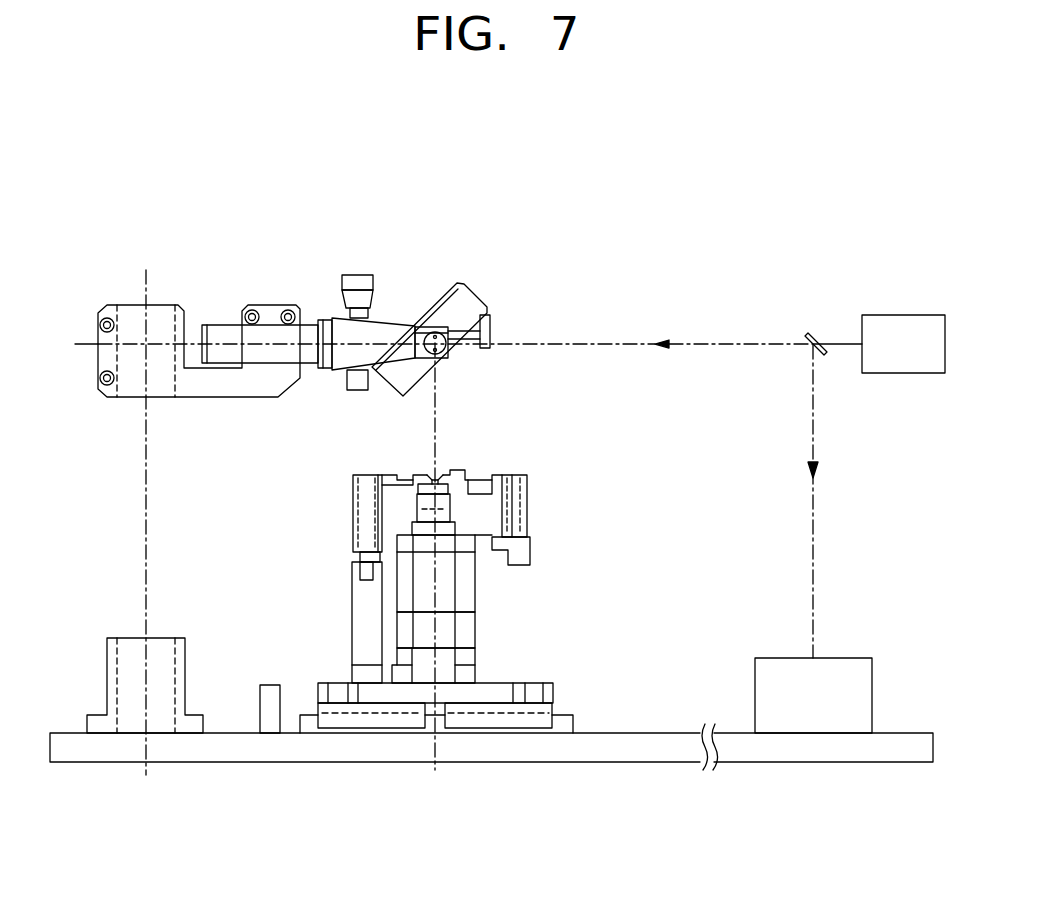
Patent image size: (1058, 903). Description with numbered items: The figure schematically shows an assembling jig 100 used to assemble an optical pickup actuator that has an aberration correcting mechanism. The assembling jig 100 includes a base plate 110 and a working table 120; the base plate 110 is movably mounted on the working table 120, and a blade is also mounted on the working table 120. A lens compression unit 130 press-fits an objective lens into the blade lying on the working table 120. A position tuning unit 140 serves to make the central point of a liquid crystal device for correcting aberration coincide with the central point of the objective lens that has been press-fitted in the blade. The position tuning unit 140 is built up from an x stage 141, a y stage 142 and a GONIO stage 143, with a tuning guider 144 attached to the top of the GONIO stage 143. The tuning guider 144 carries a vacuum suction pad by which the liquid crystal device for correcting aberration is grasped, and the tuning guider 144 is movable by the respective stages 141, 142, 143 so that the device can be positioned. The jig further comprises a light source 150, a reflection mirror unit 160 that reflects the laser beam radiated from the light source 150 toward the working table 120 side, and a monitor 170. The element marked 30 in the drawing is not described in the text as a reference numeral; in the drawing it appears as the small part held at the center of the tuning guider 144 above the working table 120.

The assembling jig 100 is at (550, 228).
The base plate 110 is at (196, 748).
The working table 120 is at (420, 501).
The lens compression unit 130 is at (360, 543).
The position tuning unit 140 is at (497, 577).
The x stage 141 is at (467, 634).
The y stage 142 is at (491, 665).
The GONIO stage 143 is at (467, 590).
The tuning guider 144 is at (513, 508).
The light source 150 is at (887, 314).
The reflection mirror unit 160 is at (398, 302).
The monitor 170 is at (857, 658).
The sample 30 is at (443, 478).